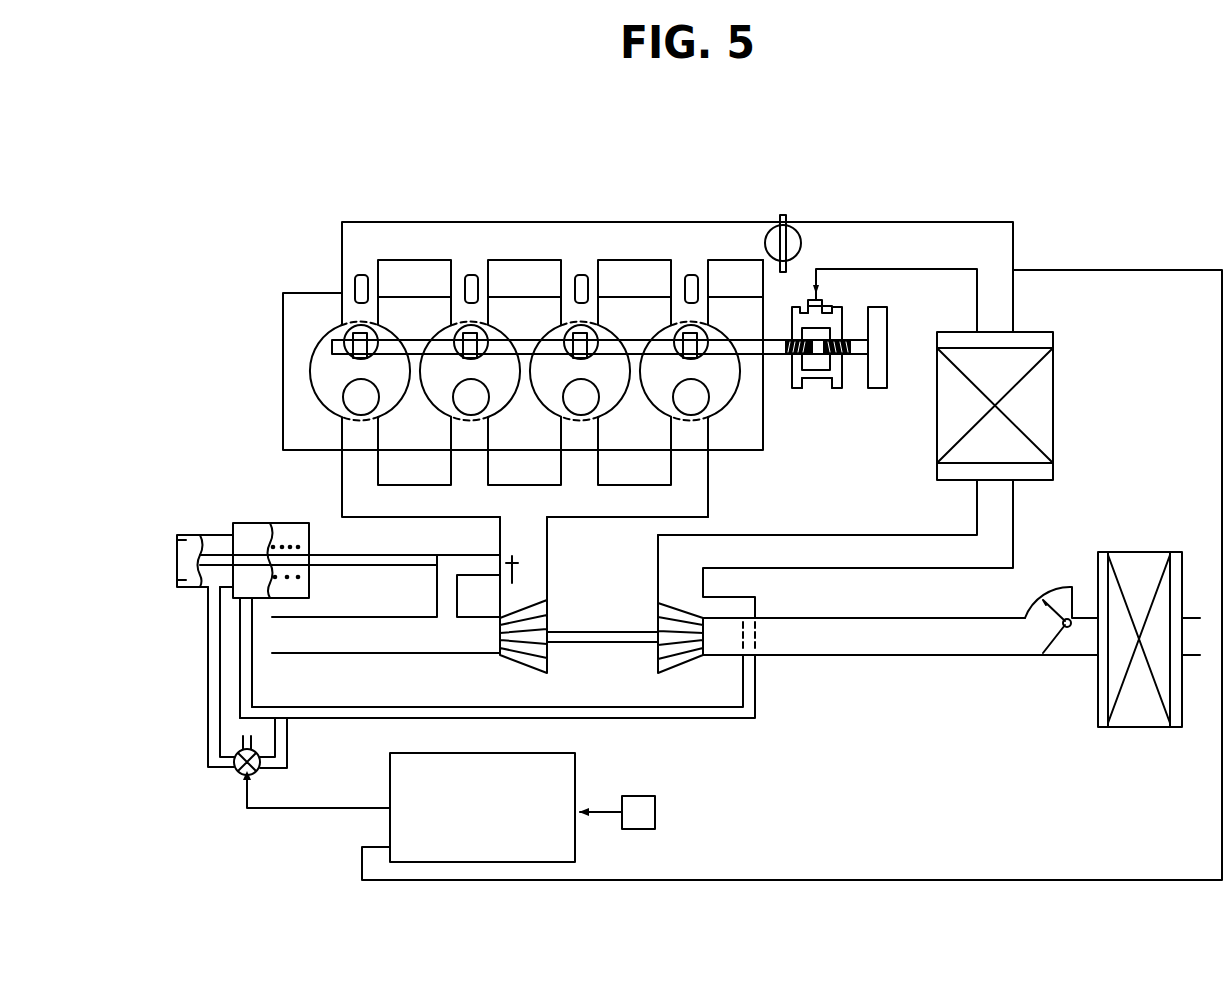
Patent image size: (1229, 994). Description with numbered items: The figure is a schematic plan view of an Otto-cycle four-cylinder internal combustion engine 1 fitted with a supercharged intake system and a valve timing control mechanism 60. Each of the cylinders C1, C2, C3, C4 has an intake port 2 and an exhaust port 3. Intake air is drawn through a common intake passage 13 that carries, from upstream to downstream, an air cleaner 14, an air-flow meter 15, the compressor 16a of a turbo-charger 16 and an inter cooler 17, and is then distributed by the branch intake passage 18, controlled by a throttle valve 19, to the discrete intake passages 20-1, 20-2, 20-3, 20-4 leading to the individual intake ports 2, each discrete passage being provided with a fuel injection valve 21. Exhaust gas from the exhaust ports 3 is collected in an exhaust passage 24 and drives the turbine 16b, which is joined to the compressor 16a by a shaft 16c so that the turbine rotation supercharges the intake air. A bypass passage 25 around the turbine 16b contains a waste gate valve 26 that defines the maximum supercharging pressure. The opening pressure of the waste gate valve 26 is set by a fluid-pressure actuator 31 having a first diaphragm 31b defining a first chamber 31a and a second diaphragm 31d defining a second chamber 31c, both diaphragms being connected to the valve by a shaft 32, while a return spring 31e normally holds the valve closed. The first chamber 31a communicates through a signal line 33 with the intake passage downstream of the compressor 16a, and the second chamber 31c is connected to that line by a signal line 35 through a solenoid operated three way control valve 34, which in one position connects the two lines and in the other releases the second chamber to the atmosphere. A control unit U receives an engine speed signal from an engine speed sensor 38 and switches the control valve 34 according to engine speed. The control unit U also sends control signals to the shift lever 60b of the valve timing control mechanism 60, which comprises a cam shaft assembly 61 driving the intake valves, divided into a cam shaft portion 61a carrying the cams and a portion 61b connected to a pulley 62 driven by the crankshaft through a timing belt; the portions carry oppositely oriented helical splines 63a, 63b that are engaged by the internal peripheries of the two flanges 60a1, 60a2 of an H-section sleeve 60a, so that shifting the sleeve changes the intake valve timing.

The engine 1 is at (268, 331).
The intake port 2 is at (348, 358).
The exhaust port 3 is at (365, 387).
The common intake passage 13 is at (895, 569).
The air cleaner 14 is at (1136, 558).
The air-flow meter 15 is at (1043, 632).
The turbo-charger 16 is at (614, 631).
The compressor 16a is at (681, 658).
The turbine 16b is at (532, 668).
The shaft 16c is at (634, 637).
The inter cooler 17 is at (1046, 393).
The branch intake passage 18 is at (549, 221).
The throttle valve 19 is at (781, 215).
The discrete intake passage 20-1 is at (735, 388).
The discrete intake passage 20-2 is at (634, 372).
The discrete intake passage 20-3 is at (524, 372).
The discrete intake passage 20-4 is at (414, 372).
The fuel injection valve 21 is at (360, 275).
The exhaust passage 24 is at (401, 652).
The bypass passage 25 is at (456, 588).
The waste gate valve 26 is at (525, 543).
The actuator 31 is at (234, 500).
The first chamber 31a is at (256, 533).
The first diaphragm 31b is at (266, 578).
The second chamber 31c is at (178, 548).
The second diaphragm 31d is at (187, 568).
The return spring 31e is at (306, 586).
The shaft 32 is at (347, 540).
The signal line 33 is at (508, 708).
The three way control valve 34 is at (238, 773).
The signal line 35 is at (207, 682).
The engine speed sensor 38 is at (656, 809).
The valve timing control mechanism 60 is at (821, 397).
The sleeve 60a is at (798, 306).
The flange 60a1 is at (799, 390).
The flange 60a2 is at (833, 389).
The shift lever 60b is at (826, 305).
The cam shaft assembly 61 is at (643, 318).
The cam shaft portion 61a is at (742, 339).
The cam shaft portion 61b is at (857, 358).
The pulley 62 is at (888, 316).
The helical spline 63a is at (779, 358).
The helical spline 63b is at (850, 343).
The first cylinder C1 is at (714, 406).
The second cylinder C2 is at (611, 406).
The third cylinder C3 is at (501, 406).
The fourth cylinder C4 is at (393, 406).
The control unit U is at (390, 763).